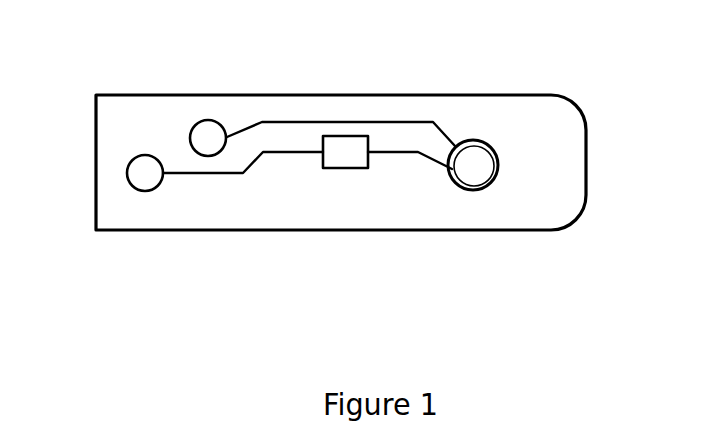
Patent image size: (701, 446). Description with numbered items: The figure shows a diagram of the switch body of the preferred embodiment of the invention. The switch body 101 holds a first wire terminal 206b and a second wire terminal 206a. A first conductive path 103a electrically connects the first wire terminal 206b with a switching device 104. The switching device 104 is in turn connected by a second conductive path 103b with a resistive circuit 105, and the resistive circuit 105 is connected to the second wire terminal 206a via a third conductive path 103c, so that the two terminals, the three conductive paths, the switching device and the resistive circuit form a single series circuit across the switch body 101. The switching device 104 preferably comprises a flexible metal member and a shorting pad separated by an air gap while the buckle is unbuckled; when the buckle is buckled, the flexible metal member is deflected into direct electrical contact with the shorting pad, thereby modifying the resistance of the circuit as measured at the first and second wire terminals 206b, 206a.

The switch body 101 is at (580, 102).
The first conductive path 103a is at (367, 120).
The second conductive path 103b is at (402, 152).
The third conductive path 103c is at (215, 173).
The switching device 104 is at (487, 150).
The resistive circuit 105 is at (342, 156).
The second wire terminal 206a is at (145, 155).
The first wire terminal 206b is at (208, 120).